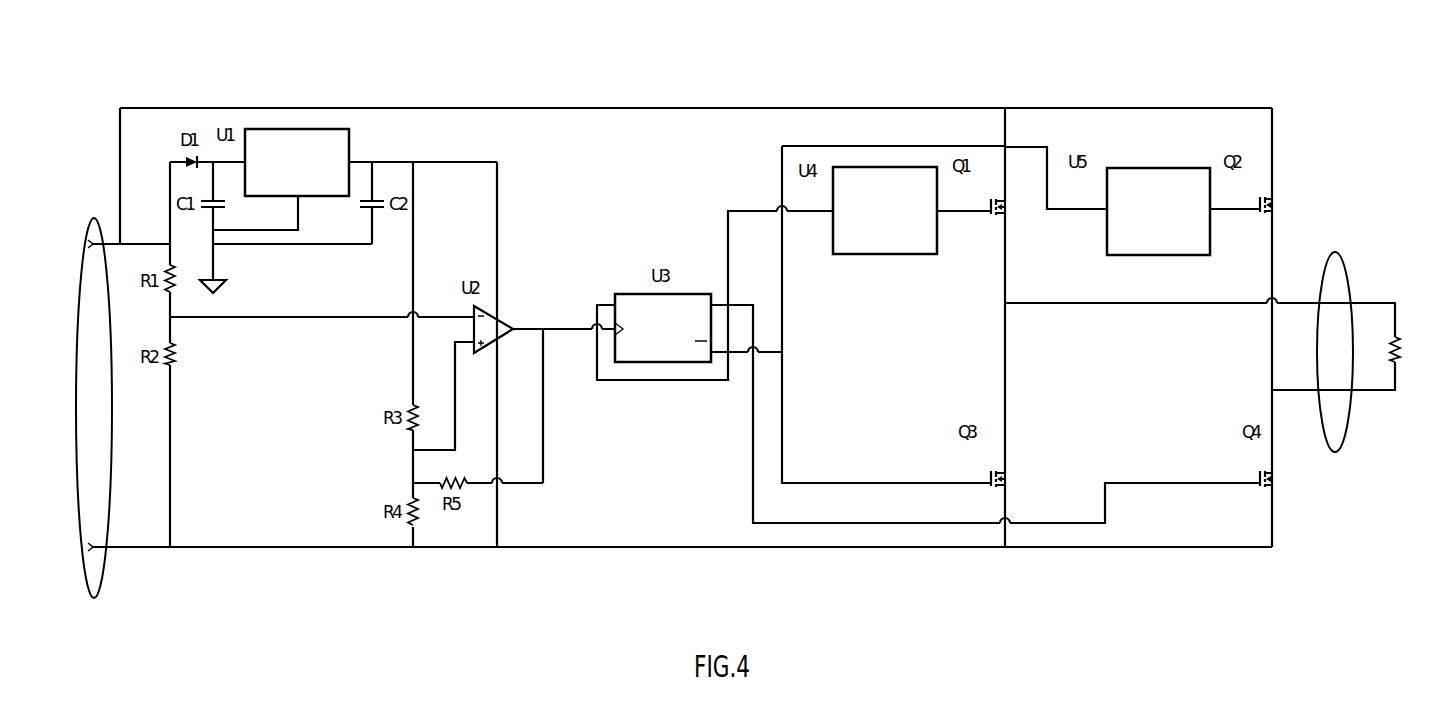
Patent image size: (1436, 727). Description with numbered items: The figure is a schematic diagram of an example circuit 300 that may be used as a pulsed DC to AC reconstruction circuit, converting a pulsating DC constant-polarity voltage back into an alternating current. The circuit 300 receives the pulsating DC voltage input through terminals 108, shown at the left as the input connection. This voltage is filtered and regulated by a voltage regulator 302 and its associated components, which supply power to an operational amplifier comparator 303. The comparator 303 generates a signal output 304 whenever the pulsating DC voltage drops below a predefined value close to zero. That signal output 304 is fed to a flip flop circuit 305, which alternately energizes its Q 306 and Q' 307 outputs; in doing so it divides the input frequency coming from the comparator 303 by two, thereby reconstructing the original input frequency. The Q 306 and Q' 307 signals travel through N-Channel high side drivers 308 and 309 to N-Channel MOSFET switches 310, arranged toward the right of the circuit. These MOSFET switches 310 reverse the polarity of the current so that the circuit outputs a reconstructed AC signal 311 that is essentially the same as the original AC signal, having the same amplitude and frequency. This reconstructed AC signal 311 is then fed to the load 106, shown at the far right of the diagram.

The circuit 300 is at (1299, 108).
The voltage regulator 302 is at (321, 128).
The operational amplifier comparator 303 is at (512, 323).
The signal output 304 is at (562, 325).
The flip flop circuit 305 is at (633, 293).
The Q 306 is at (718, 304).
The Q' 307 is at (713, 382).
The N-Channel high side driver 308 is at (860, 256).
The N-Channel high side driver 309 is at (1120, 256).
The N-Channel MOSFET switches 310 is at (992, 216).
The reconstructed AC signal 311 is at (1341, 450).
The load 106 is at (1398, 364).
The terminals 108 is at (100, 583).